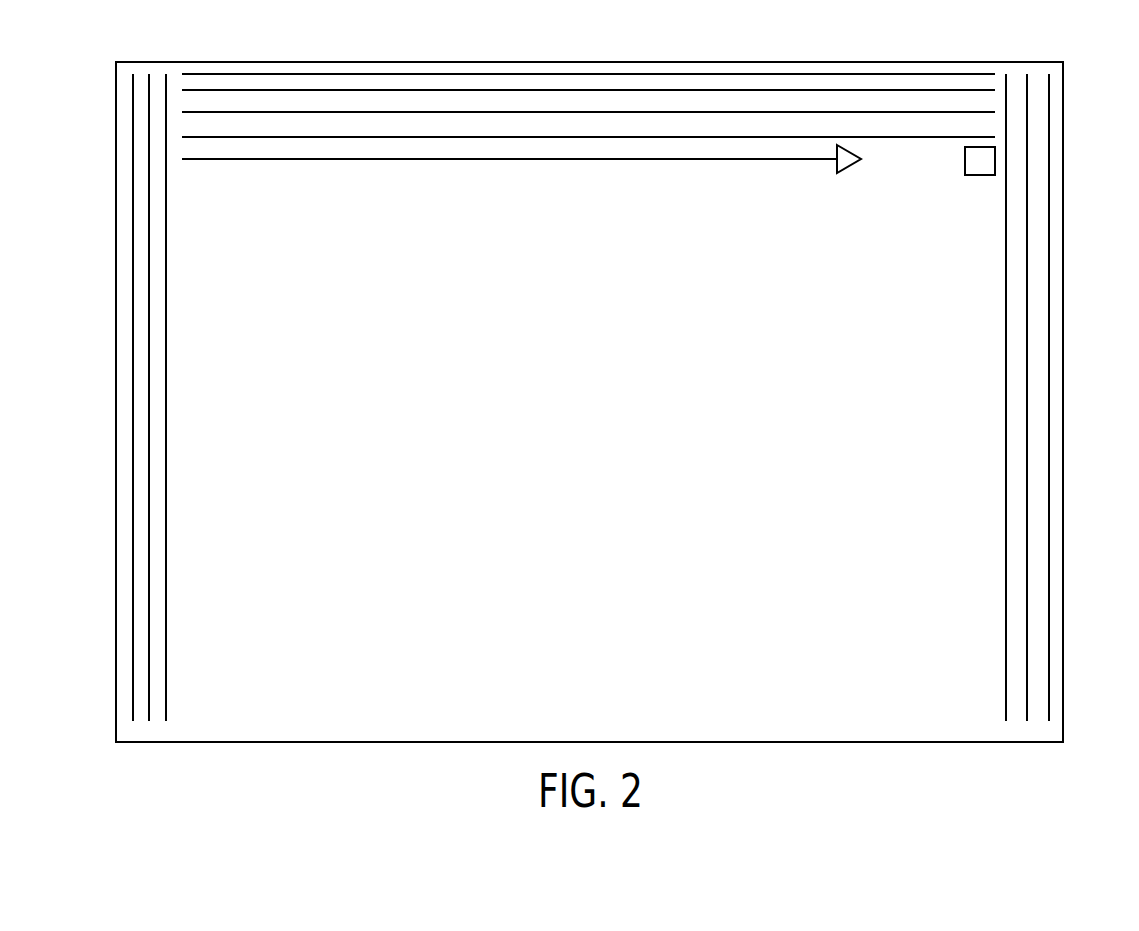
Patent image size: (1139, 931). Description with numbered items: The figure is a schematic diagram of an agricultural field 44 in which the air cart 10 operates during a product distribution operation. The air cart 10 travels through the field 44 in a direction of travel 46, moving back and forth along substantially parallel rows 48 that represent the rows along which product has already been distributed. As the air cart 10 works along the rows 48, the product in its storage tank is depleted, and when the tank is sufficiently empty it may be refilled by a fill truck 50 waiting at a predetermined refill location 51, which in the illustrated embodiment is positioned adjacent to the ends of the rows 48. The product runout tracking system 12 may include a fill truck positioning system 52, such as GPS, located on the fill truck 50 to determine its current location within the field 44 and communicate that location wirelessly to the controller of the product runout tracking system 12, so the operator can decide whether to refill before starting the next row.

The air cart 10 is at (847, 153).
The product runout tracking system 12 is at (976, 48).
The agricultural field 44 is at (350, 386).
The direction of travel 46 is at (853, 202).
The rows 48 is at (357, 136).
The fill truck 50 is at (995, 159).
The refill location 51 is at (994, 144).
The fill truck positioning system 52 is at (980, 177).